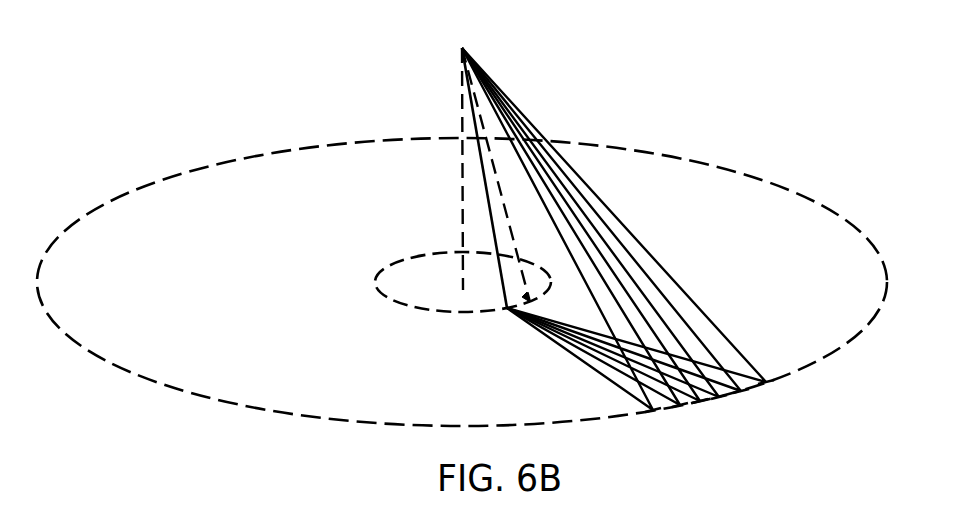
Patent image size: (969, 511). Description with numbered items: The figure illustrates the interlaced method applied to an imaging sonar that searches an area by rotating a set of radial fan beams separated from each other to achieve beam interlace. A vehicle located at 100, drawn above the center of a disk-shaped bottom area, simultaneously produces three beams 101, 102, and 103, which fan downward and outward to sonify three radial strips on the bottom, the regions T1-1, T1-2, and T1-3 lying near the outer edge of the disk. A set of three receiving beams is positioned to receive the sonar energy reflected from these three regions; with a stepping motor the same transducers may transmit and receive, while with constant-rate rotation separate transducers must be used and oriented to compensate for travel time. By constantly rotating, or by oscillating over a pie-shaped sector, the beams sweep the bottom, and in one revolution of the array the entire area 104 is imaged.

The vehicle 100 is at (462, 48).
The beam 101 is at (640, 248).
The beam 102 is at (640, 290).
The beam 103 is at (565, 219).
The area 104 is at (749, 177).
The region sonified by first beam T1-1 is at (752, 390).
The region sonified by second beam T1-2 is at (713, 398).
The region sonified by third beam T1-3 is at (660, 409).